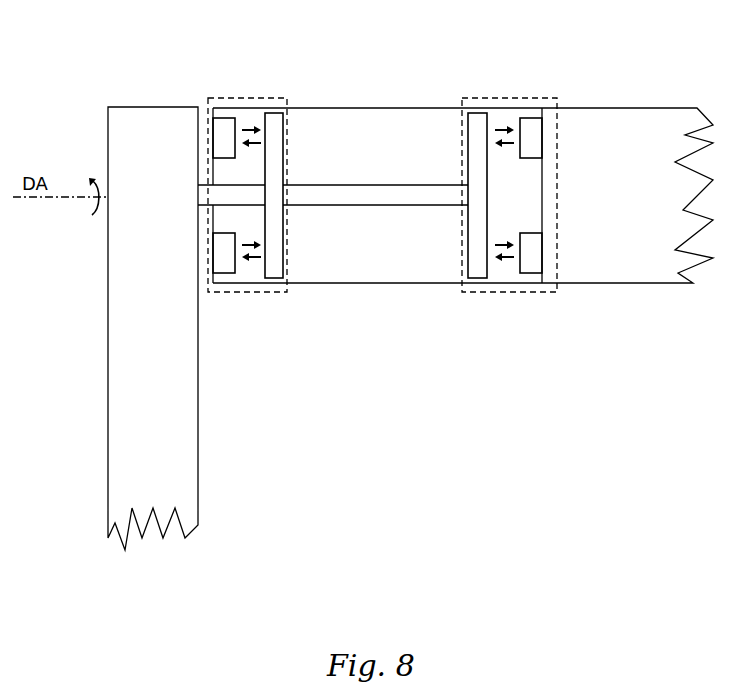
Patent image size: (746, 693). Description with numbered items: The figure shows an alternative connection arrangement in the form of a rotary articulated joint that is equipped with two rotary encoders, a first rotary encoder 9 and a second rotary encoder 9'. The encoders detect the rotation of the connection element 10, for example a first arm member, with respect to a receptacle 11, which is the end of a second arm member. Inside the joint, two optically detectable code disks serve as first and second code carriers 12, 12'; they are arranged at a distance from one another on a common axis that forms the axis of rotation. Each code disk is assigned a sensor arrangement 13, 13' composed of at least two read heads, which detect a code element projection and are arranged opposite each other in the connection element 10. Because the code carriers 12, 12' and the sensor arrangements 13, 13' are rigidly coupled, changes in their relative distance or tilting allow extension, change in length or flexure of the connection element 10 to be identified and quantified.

The first rotary encoder 9 is at (293, 166).
The second rotary encoder 9' is at (543, 166).
The connection element 10 is at (357, 270).
The receptacle 11 is at (162, 452).
The first code carrier 12 is at (327, 174).
The second code carrier 12' is at (552, 144).
The sensor arrangement 13 is at (301, 171).
The sensor arrangement 13' is at (566, 202).